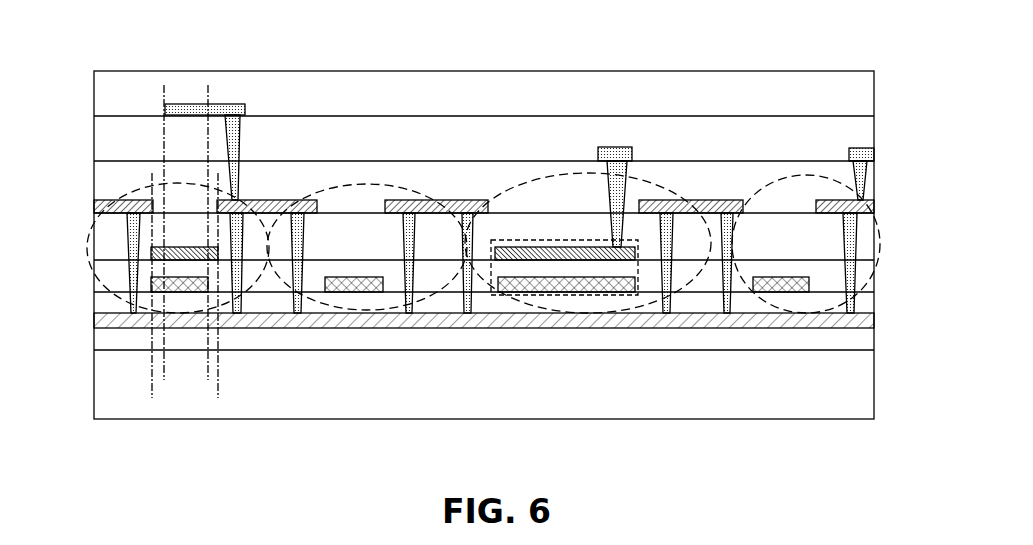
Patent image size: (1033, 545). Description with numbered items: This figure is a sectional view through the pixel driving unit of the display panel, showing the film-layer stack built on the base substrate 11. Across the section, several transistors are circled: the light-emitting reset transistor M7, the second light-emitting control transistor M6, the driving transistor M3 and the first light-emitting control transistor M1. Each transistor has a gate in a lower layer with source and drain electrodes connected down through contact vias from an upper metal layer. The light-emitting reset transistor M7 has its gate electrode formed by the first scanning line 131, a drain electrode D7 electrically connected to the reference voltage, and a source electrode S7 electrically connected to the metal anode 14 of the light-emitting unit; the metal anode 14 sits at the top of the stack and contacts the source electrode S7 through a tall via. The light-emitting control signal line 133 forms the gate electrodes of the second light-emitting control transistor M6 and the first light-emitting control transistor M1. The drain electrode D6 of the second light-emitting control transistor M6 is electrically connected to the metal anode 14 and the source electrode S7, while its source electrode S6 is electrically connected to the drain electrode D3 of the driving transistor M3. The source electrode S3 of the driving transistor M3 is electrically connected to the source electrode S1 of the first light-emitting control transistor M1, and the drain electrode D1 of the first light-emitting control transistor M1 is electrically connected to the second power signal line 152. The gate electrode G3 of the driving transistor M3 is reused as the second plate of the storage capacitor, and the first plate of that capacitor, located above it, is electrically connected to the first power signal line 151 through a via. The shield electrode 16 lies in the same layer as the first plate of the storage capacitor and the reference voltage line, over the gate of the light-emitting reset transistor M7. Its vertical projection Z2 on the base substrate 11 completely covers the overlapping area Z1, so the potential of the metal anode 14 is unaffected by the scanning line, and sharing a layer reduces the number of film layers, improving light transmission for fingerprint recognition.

The base substrate 11 is at (874, 388).
The metal anode 14 is at (228, 104).
The shield electrode 16 is at (198, 245).
The first scanning line 131 is at (187, 285).
The light-emitting control signal line 133 is at (355, 285).
The first power signal line 151 is at (617, 147).
The second power signal line 152 is at (545, 247).
The gate electrode of the driving transistor G3 is at (560, 285).
The first light-emitting control transistor M1 is at (790, 175).
The driving transistor M3 is at (570, 172).
The second light-emitting control transistor M6 is at (355, 185).
The light-emitting reset transistor M7 is at (178, 185).
The source electrode of the first light-emitting control transistor S1 is at (727, 200).
The drain electrode of the first light-emitting control transistor D1 is at (848, 200).
The source electrode of the driving transistor S3 is at (666, 200).
The drain electrode of the driving transistor D3 is at (468, 200).
The source electrode of the second light-emitting control transistor S6 is at (408, 200).
The drain electrode of the second light-emitting control transistor D6 is at (297, 200).
The source electrode of the light-emitting reset transistor S7 is at (236, 200).
The drain electrode of the light-emitting reset transistor D7 is at (94, 200).
The overlapping area Z1 is at (208, 368).
The vertical projection of the shield electrode Z2 is at (218, 389).